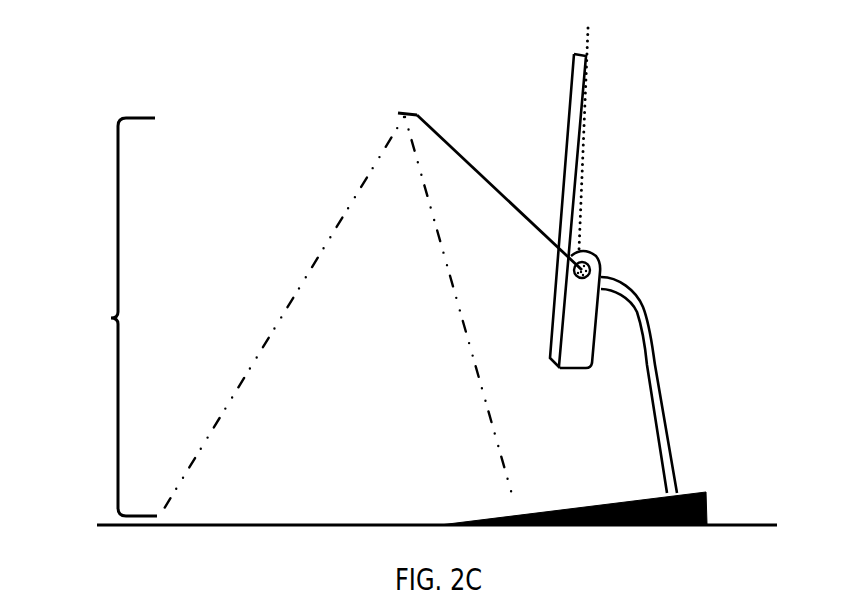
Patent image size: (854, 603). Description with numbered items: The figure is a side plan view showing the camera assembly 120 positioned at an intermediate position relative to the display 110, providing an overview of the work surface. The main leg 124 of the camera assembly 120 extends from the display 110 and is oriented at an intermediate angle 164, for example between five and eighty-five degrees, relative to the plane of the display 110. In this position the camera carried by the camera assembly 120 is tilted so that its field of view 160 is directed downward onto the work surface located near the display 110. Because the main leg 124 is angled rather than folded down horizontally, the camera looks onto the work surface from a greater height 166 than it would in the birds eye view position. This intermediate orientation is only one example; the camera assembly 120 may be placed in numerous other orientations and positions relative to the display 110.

The display 110 is at (528, 346).
The camera assembly 120 is at (391, 90).
The main leg 124 is at (492, 186).
The field of view 160 is at (334, 233).
The intermediate angle 164 is at (592, 83).
The height 166 is at (110, 318).